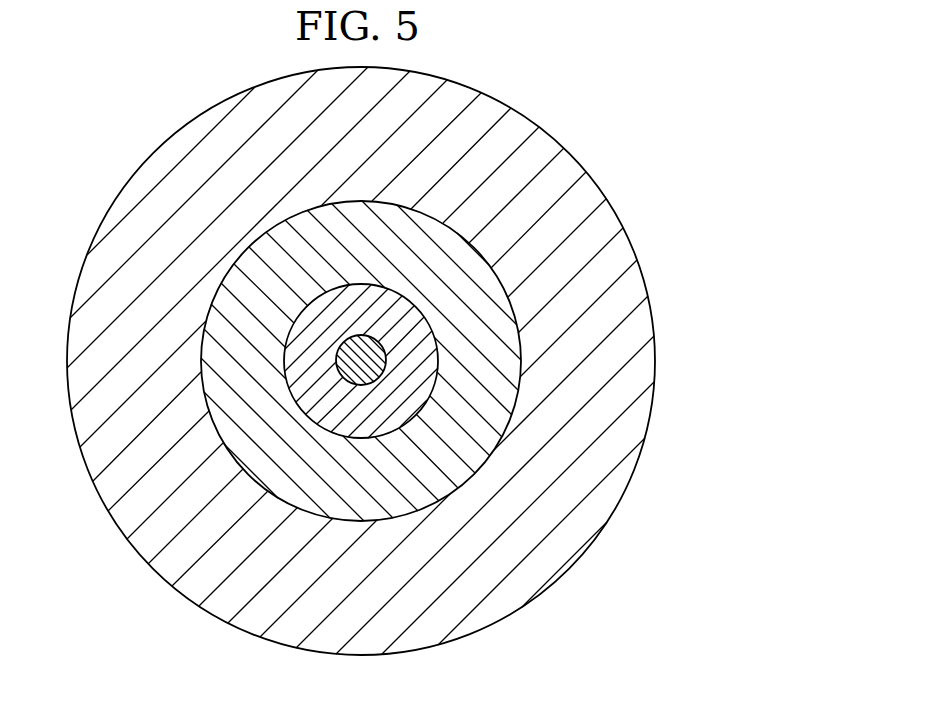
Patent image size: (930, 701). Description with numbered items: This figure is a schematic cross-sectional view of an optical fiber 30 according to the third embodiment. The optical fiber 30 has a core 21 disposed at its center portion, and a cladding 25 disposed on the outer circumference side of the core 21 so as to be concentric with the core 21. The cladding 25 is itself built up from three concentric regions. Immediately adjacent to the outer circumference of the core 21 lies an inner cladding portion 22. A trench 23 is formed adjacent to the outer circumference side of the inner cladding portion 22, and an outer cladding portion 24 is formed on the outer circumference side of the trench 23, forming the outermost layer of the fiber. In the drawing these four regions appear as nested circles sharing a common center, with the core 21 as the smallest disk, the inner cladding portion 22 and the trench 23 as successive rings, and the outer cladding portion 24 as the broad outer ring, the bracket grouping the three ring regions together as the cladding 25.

The core 21 is at (373, 351).
The inner cladding portion 22 is at (360, 312).
The trench 23 is at (478, 313).
The outer cladding portion 24 is at (607, 328).
The cladding 25 is at (720, 185).
The optical fiber 30 is at (636, 101).